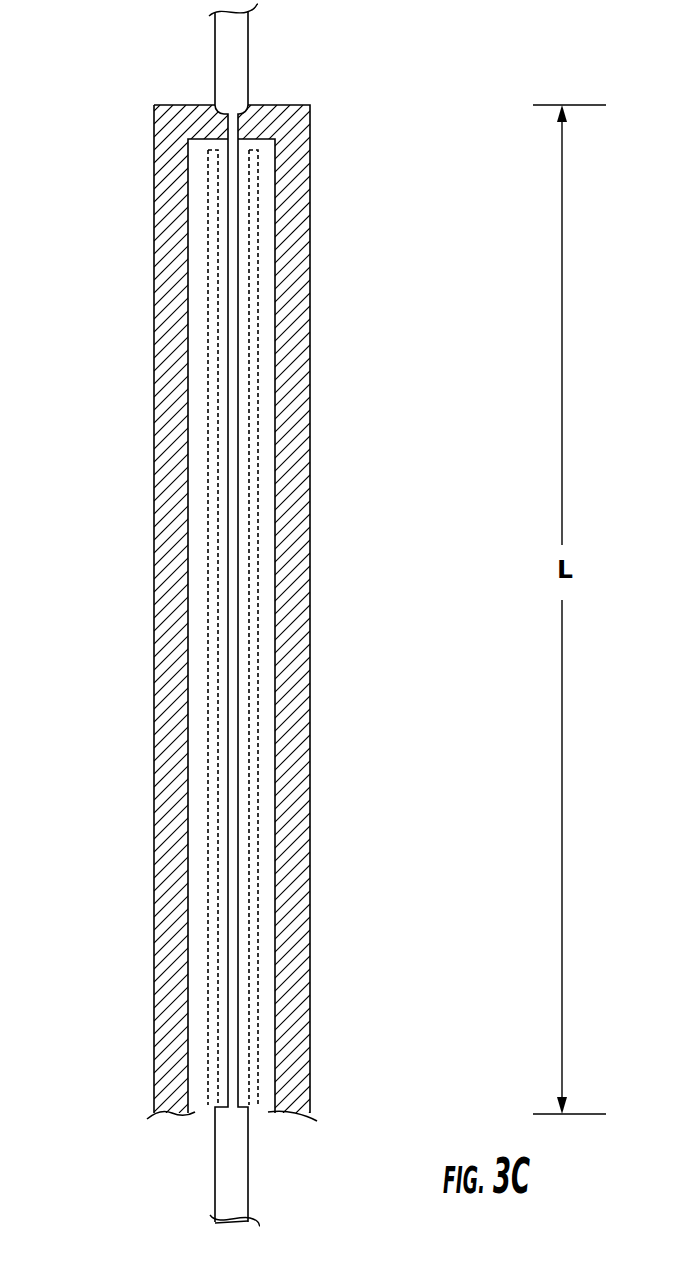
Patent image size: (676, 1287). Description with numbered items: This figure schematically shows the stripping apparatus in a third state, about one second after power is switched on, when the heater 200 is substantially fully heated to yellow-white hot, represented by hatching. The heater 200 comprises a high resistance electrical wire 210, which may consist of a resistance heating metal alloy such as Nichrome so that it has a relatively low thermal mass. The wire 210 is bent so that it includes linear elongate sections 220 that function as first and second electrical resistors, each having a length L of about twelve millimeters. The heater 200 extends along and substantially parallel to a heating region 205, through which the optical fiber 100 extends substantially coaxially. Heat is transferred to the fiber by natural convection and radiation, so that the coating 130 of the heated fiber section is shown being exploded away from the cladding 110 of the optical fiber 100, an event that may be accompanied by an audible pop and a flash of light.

The optical fiber 100 is at (285, 615).
The cladding 110 is at (240, 571).
The coating 130 is at (285, 615).
The heater 200 is at (309, 613).
The high resistance electrical wire 210 is at (314, 421).
The elongate sections 220 is at (154, 310).
The heating region 205 is at (200, 966).